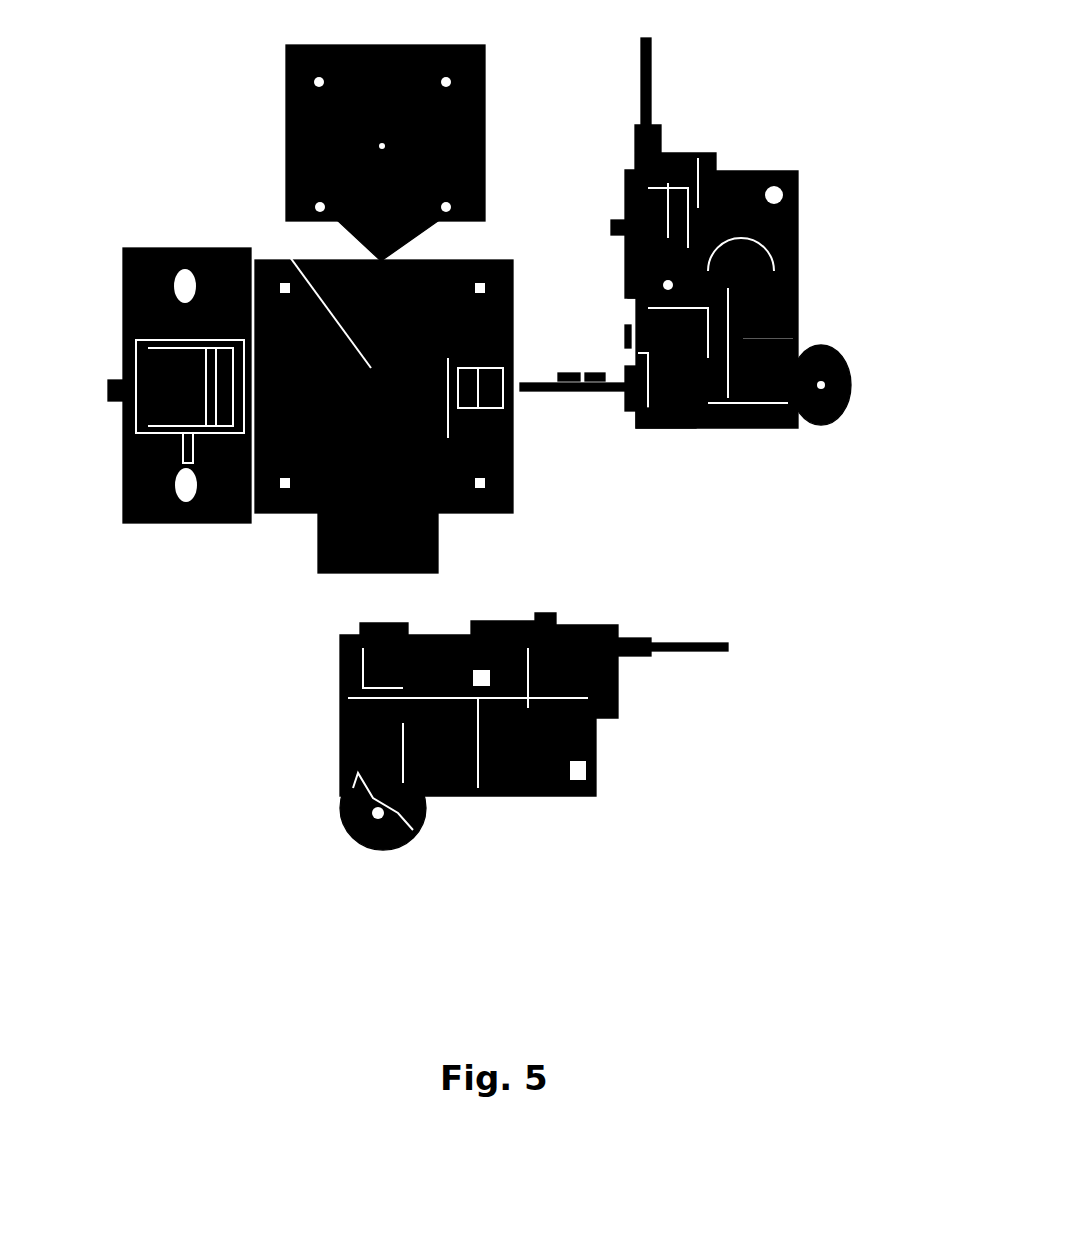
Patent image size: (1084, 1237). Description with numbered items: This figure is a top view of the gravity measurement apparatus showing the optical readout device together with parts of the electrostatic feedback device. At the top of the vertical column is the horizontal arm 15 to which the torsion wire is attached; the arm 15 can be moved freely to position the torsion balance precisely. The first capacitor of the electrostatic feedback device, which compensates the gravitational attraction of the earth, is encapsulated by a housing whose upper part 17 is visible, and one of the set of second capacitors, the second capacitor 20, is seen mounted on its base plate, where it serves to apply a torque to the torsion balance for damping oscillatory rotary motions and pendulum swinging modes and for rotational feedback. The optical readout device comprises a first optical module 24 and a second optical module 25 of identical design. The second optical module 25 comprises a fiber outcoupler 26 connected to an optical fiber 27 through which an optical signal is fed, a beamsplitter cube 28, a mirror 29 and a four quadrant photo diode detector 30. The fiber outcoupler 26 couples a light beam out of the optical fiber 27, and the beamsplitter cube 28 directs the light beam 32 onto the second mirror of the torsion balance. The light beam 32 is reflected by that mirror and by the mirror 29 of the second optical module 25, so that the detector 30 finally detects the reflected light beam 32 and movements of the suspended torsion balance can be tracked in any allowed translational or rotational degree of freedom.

The horizontal arm 15 is at (336, 388).
The upper part 17 is at (300, 130).
The second capacitor 20 is at (477, 330).
The first optical module 24 is at (459, 753).
The second optical module 25 is at (722, 296).
The fiber outcoupler 26 is at (625, 280).
The optical fiber 27 is at (640, 70).
The beamsplitter cube 28 is at (637, 420).
The mirror 29 is at (793, 413).
The four quadrant photo diode detector 30 is at (792, 303).
The light beam 32 is at (572, 393).